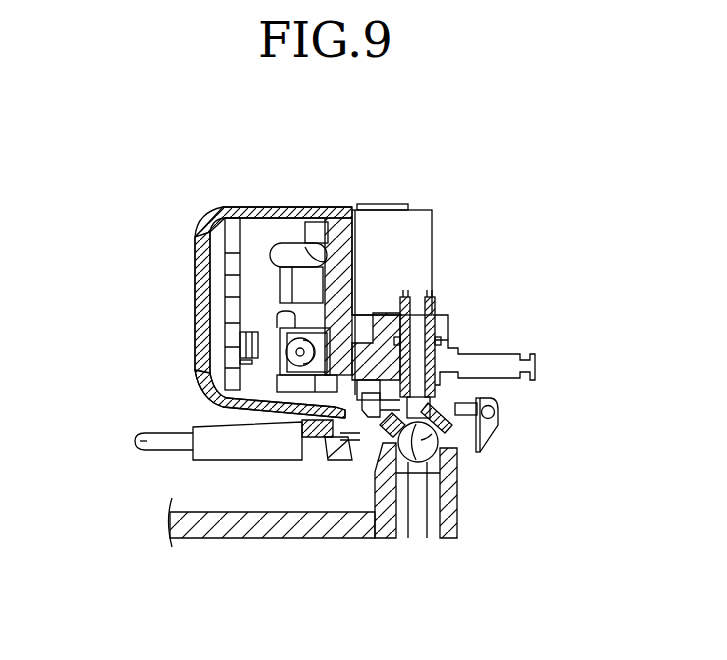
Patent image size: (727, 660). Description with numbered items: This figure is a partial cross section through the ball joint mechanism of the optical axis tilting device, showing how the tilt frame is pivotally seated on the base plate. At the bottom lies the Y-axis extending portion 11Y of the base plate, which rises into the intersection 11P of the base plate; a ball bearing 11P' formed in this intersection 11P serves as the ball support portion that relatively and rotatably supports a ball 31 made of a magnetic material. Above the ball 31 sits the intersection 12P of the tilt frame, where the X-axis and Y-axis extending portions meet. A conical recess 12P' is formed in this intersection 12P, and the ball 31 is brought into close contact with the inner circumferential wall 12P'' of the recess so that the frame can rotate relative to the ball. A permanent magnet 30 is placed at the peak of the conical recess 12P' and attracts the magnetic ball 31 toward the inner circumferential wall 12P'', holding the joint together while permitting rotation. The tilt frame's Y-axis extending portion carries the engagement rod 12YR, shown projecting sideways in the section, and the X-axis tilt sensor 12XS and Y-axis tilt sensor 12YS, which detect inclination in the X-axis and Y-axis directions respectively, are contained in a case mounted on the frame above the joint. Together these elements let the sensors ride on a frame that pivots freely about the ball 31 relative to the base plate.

The X-axis tilt sensor 12XS is at (324, 269).
The Y-axis tilt sensor 12YS is at (348, 200).
The intersection 12P is at (491, 326).
The conical recess 12P' is at (560, 409).
The inner circumferential wall 12P'' is at (423, 509).
The permanent magnet 30 is at (460, 396).
The ball 31 is at (436, 452).
The intersection 11P is at (503, 494).
The ball bearing 11P' is at (305, 455).
The Y-axis extending portion 11Y is at (273, 540).
The engagement rod 12YR is at (138, 442).